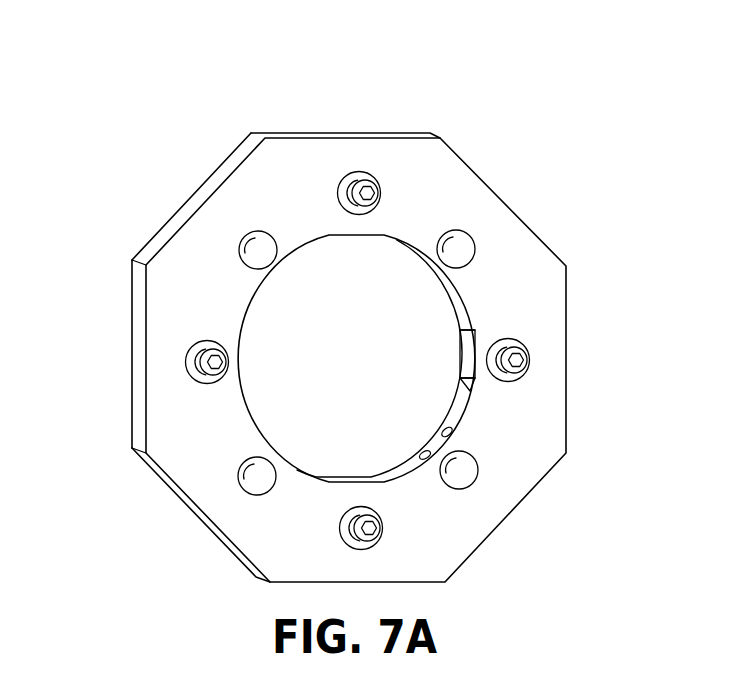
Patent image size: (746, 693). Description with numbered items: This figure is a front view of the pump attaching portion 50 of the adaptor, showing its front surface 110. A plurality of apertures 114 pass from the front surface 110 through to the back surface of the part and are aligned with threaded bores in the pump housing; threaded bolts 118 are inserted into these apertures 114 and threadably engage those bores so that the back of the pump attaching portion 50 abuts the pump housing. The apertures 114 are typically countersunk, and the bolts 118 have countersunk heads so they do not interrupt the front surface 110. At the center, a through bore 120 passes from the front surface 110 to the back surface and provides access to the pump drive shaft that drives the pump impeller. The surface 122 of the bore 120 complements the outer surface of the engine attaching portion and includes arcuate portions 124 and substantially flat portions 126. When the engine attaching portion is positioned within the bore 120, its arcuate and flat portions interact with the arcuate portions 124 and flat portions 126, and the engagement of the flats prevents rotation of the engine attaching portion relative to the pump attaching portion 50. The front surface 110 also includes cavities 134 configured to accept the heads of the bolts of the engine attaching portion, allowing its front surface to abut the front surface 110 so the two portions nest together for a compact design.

The pump attaching portion 50 is at (398, 80).
The front surface 110 is at (508, 245).
The apertures 114 is at (193, 347).
The threaded bolts 118 is at (195, 362).
The through bore 120 is at (263, 405).
The surface of bore 122 is at (468, 394).
The arcuate portions 124 is at (467, 350).
The substantially flat portions 126 is at (466, 316).
The cavities 134 is at (248, 246).